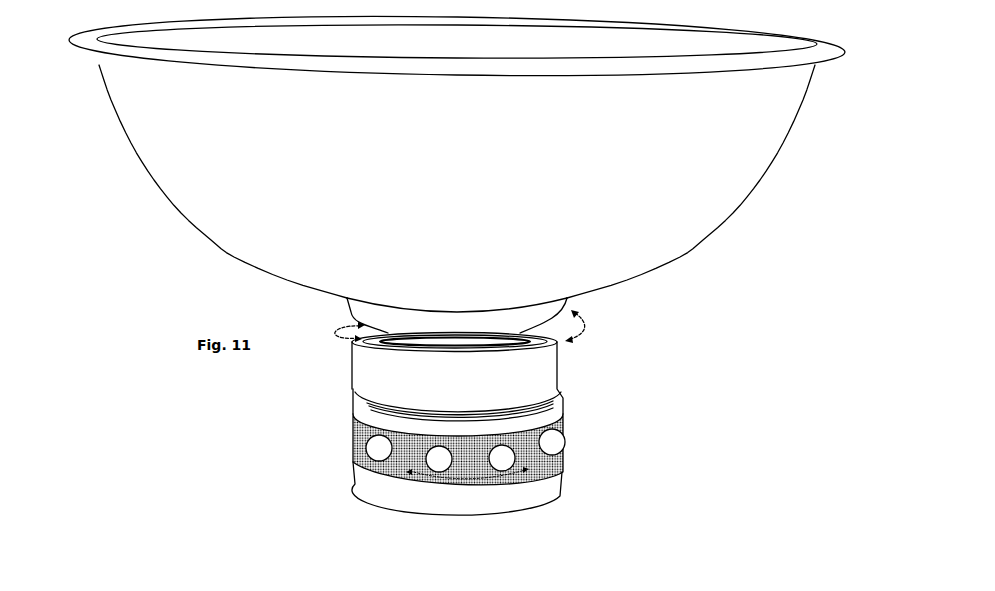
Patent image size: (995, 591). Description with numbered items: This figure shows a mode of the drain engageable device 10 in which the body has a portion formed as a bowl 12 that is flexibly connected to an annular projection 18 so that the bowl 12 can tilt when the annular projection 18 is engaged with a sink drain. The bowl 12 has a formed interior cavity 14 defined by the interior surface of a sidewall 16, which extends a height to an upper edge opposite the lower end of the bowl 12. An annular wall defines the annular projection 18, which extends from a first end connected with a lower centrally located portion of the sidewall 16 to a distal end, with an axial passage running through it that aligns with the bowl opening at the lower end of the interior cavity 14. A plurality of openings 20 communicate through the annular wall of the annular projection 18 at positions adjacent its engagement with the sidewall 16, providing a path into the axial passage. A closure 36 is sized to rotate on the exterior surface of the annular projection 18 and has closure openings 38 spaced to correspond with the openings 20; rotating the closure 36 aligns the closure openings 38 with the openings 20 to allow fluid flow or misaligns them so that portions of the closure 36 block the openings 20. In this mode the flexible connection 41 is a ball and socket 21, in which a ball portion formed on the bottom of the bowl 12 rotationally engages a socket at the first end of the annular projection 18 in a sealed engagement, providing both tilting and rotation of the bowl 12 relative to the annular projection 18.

The drain engageable device 10 is at (735, 248).
The bowl 12 is at (131, 137).
The interior cavity 14 is at (650, 42).
The sidewall 16 is at (220, 195).
The annular projection 18 is at (358, 407).
The openings 20 is at (440, 450).
The ball and socket 21 is at (427, 338).
The closure 36 is at (353, 431).
The closure openings 38 is at (550, 452).
The flexible connection 41 is at (498, 338).